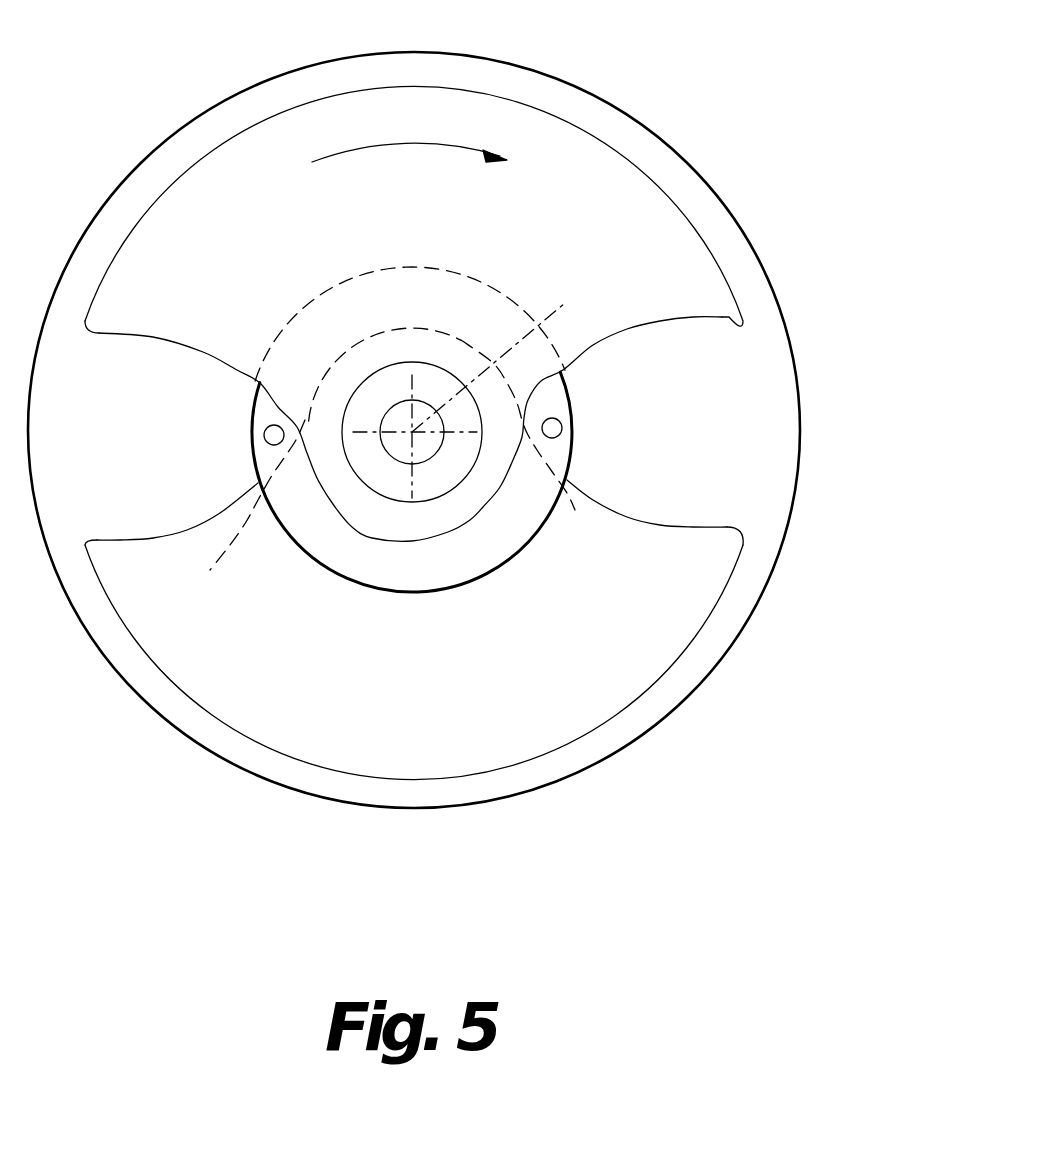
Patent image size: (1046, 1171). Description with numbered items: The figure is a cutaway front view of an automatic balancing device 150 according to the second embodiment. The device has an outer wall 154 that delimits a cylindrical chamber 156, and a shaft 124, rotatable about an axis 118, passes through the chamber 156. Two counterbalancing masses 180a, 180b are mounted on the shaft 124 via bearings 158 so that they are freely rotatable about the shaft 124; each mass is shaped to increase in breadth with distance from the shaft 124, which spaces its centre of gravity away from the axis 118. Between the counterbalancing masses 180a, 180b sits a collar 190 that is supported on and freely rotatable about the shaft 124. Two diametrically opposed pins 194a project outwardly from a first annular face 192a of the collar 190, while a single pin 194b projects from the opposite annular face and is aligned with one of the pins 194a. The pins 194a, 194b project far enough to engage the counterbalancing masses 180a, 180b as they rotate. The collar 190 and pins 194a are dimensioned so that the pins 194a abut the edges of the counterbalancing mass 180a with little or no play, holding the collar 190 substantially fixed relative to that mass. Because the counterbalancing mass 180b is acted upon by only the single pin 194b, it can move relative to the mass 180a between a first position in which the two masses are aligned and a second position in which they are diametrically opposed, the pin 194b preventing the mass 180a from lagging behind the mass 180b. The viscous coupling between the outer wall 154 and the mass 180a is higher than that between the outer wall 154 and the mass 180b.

The automatic balancing device 150 is at (452, 415).
The outer wall 154 is at (802, 418).
The cylindrical chamber 156 is at (737, 493).
The counterbalancing mass 180a is at (535, 122).
The counterbalancing mass 180b is at (663, 620).
The first annular face 192a is at (510, 532).
The collar 190 is at (572, 445).
The bearings 158 is at (408, 492).
The shaft 124 is at (400, 410).
The axis 118 is at (474, 384).
The pins 194a is at (264, 438).
The pin 194b is at (238, 512).